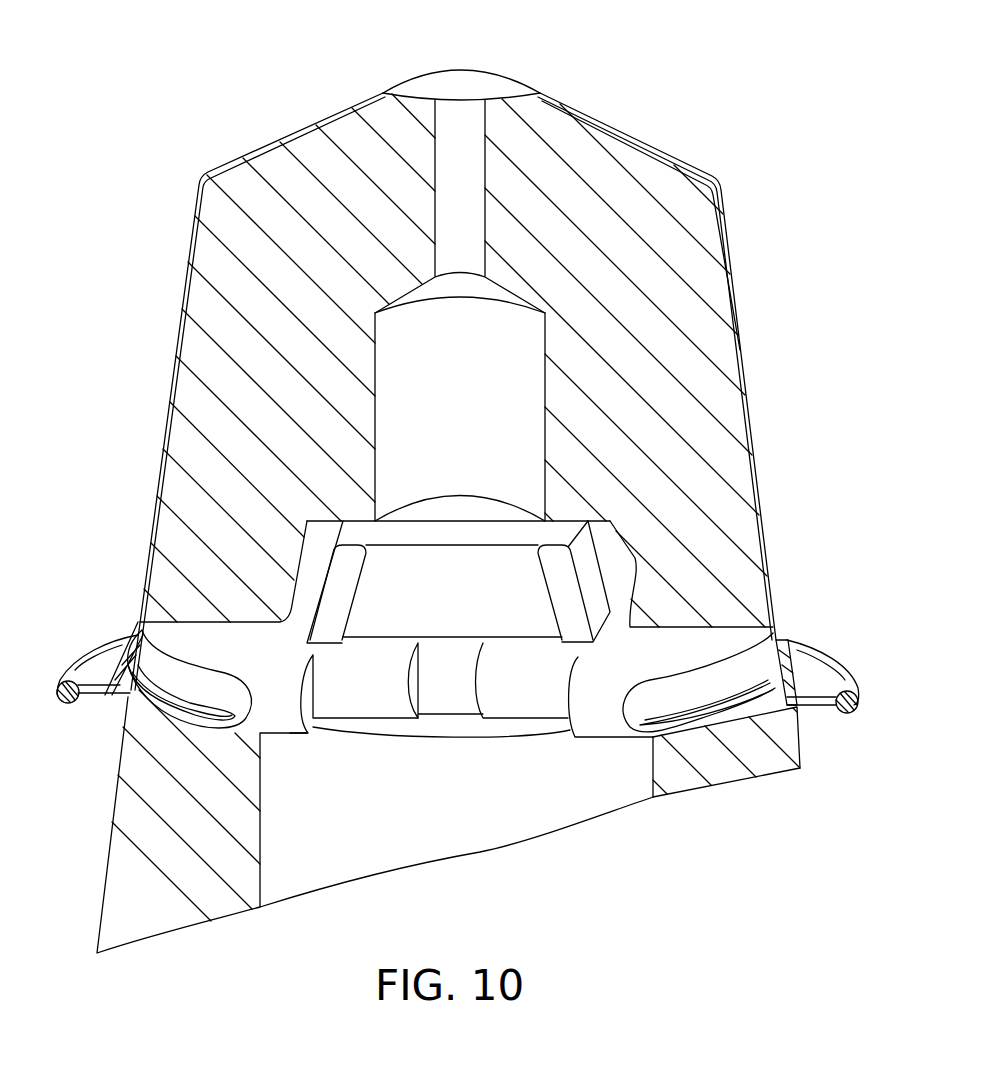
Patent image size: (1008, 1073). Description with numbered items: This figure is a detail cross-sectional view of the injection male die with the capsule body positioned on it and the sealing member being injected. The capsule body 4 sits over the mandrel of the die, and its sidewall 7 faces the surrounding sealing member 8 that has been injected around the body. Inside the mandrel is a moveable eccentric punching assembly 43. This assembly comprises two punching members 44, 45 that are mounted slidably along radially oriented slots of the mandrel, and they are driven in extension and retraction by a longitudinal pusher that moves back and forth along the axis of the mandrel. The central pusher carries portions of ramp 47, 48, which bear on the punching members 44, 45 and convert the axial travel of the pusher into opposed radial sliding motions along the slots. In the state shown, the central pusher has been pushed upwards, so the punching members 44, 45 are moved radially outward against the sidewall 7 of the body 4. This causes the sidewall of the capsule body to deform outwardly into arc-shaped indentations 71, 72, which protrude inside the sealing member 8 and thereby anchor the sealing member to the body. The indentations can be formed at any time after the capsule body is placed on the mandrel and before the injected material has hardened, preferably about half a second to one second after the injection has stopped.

The body 4 is at (620, 120).
The sidewall 7 is at (162, 386).
The sealing member 8 is at (58, 694).
The eccentric punching assembly 43 is at (470, 838).
The punching member 44 is at (160, 634).
The punching member 45 is at (742, 637).
The portion of ramp 47 is at (327, 565).
The portion of ramp 48 is at (592, 570).
The arc-shaped indentation 71 is at (108, 698).
The arc-shaped indentation 72 is at (800, 712).